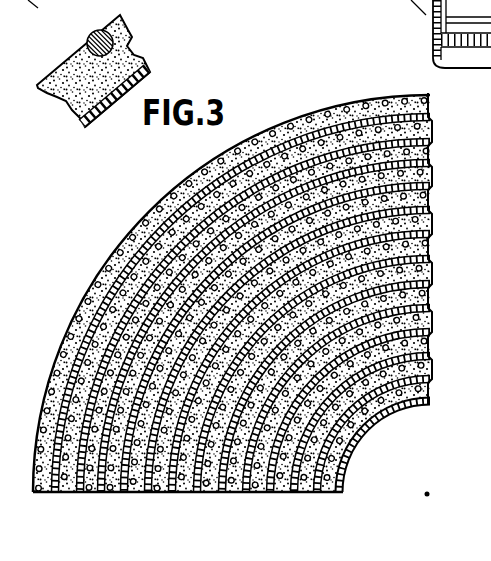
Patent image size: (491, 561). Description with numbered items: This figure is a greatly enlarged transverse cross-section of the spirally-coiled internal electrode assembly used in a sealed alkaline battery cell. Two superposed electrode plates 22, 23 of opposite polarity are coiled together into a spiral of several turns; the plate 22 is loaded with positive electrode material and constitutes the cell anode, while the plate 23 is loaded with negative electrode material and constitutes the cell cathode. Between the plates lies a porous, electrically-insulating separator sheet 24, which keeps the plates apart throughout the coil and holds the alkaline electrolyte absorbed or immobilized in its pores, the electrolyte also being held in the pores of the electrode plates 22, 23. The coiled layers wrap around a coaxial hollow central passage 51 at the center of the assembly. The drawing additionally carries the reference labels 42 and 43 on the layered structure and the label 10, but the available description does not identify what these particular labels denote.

The hose 10 is at (428, 493).
The electrode plate 22 is at (303, 497).
The electrode plate 23 is at (47, 492).
The separator sheet 24 is at (151, 67).
The elastomeric body 42 is at (131, 50).
The reinforcing wire 43 is at (88, 40).
The hollow central passage 51 is at (404, 467).